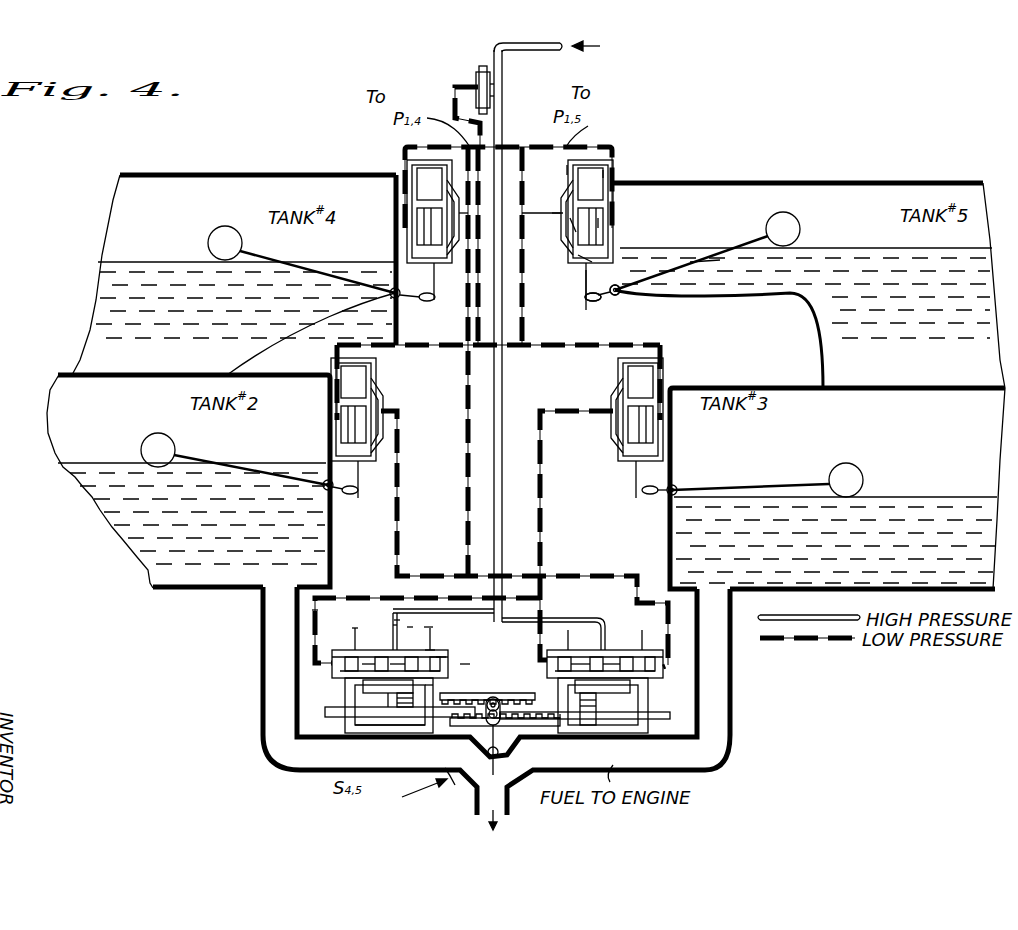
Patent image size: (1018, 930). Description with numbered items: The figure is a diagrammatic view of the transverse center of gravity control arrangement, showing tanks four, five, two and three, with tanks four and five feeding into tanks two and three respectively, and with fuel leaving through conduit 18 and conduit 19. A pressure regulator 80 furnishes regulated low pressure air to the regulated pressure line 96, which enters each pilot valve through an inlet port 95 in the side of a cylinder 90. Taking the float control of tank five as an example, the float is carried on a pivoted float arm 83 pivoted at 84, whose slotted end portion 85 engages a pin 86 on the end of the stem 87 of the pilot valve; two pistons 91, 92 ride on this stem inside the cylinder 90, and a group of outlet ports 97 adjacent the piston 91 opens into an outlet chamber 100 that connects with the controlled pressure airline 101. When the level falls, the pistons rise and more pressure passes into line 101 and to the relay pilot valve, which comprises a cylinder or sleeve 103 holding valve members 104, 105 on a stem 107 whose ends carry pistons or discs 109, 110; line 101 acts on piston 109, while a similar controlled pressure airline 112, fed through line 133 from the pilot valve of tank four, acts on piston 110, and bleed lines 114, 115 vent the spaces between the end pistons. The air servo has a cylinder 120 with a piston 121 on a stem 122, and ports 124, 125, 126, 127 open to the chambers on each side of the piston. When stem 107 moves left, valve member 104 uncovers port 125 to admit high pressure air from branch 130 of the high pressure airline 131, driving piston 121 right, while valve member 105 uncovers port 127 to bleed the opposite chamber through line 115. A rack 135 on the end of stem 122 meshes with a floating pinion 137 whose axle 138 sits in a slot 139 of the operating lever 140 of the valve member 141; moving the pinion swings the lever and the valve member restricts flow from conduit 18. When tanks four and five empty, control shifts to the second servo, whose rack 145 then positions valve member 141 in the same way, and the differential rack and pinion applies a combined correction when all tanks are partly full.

The pressure regulator 80 is at (478, 85).
The regulated pressure line 96 is at (522, 145).
The outlet chamber 100 is at (567, 170).
The cylinder 90 is at (603, 173).
The controlled pressure airline 101 is at (543, 190).
The piston 91 is at (613, 180).
The inlet port 95 is at (603, 222).
The pivot 84 is at (617, 290).
The float arm 83 is at (703, 262).
The outlet ports 97 is at (570, 225).
The piston 92 is at (583, 257).
The stem 87 is at (585, 278).
The slotted end portion 85 is at (580, 307).
The pin 86 is at (590, 307).
The line 133 is at (463, 402).
The high pressure airline 131 is at (494, 440).
The branch 130 is at (397, 623).
The cylinder or sleeve 103 is at (410, 627).
The bleed line 115 is at (427, 627).
The bleed line 114 is at (354, 627).
The stem 107 is at (388, 627).
The piston or disc 109 is at (337, 650).
The piston or valve member 104 is at (333, 673).
The port 124 is at (382, 677).
The stem 122 is at (337, 707).
The port 125 is at (380, 682).
The piston or valve member 105 is at (430, 650).
The controlled pressure airline 112 is at (467, 664).
The piston or disc 110 is at (440, 658).
The floating pinion 137 is at (490, 713).
The port 127 is at (433, 681).
The axle 138 is at (493, 698).
The slot 139 is at (480, 717).
The port 126 is at (363, 720).
The operating lever 140 is at (487, 735).
The cylinder 120 is at (347, 733).
The conduit 18 is at (337, 760).
The piston 121 is at (413, 720).
The valve member 141 is at (490, 778).
The rack 145 is at (523, 727).
The rack 135 is at (543, 727).
The conduit 19 is at (713, 758).